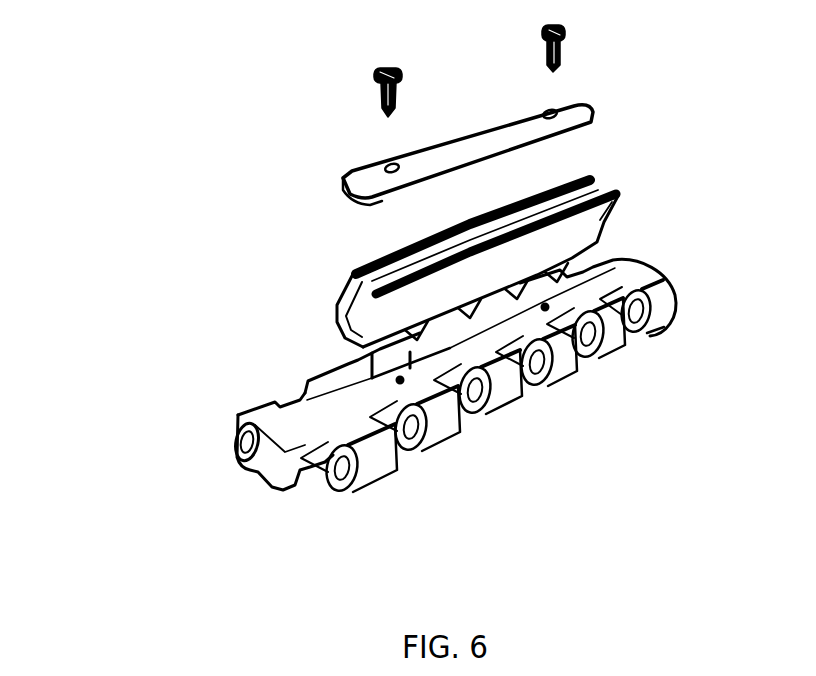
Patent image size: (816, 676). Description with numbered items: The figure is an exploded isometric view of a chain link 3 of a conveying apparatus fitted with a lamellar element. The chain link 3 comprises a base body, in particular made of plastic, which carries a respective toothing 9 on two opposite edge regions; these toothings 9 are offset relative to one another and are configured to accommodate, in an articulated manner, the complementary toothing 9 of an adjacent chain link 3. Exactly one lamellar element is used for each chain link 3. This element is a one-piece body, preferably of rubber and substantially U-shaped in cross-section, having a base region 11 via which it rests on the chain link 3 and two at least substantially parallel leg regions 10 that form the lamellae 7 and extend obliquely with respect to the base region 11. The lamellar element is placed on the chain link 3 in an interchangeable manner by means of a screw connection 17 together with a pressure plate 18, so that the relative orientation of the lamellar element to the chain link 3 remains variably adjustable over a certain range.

The chain link 3 is at (333, 416).
The lamellae 7 is at (479, 263).
The toothing 9 is at (253, 412).
The leg regions 10 is at (479, 263).
The base region 11 is at (353, 340).
The screw connection 17 is at (385, 88).
The pressure plate 18 is at (366, 183).